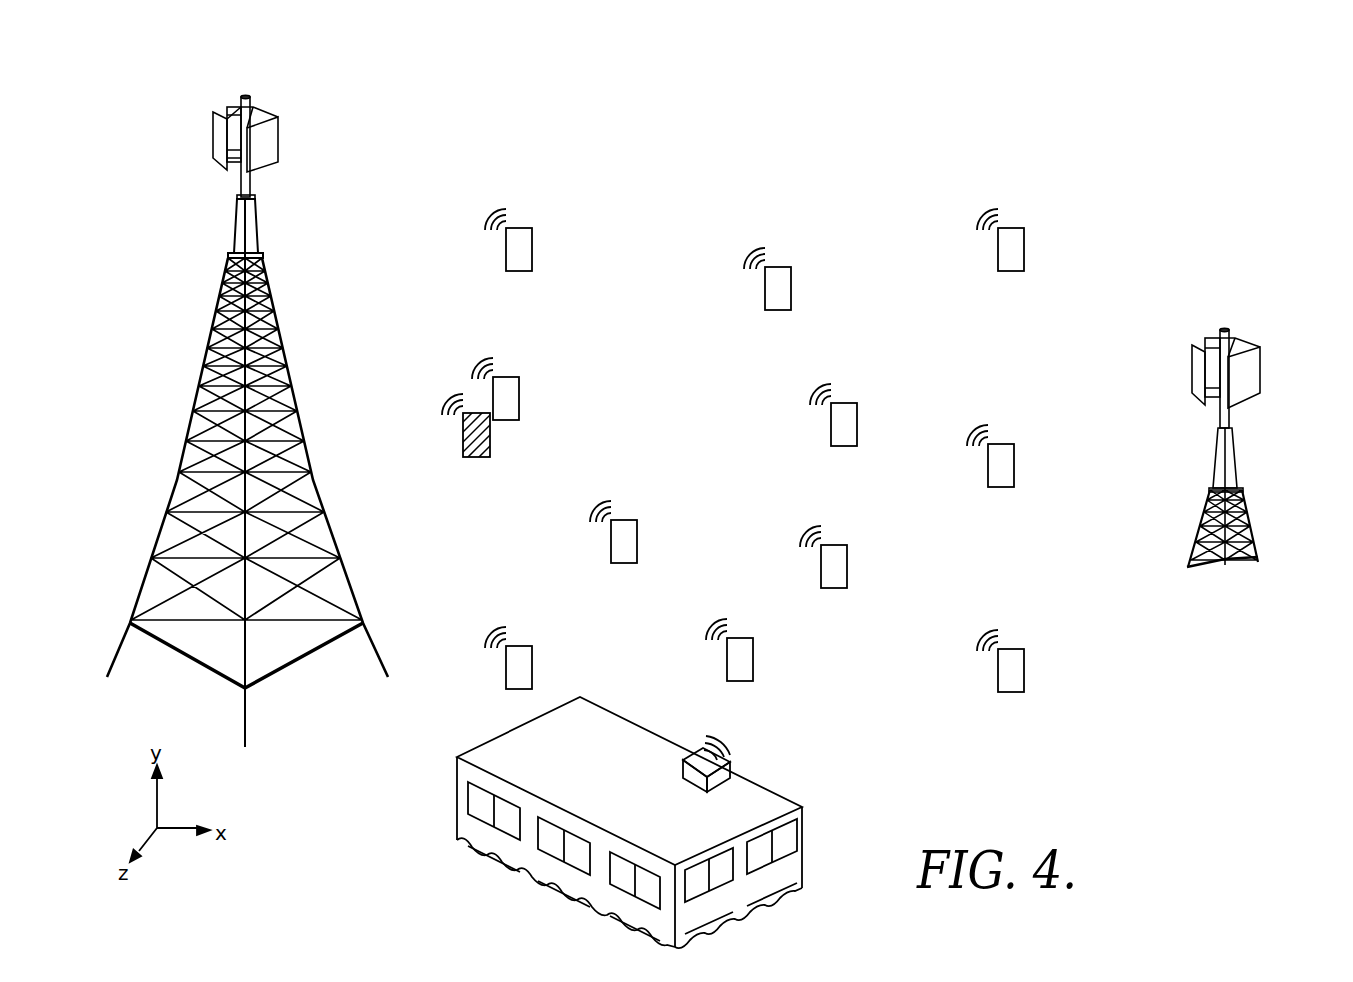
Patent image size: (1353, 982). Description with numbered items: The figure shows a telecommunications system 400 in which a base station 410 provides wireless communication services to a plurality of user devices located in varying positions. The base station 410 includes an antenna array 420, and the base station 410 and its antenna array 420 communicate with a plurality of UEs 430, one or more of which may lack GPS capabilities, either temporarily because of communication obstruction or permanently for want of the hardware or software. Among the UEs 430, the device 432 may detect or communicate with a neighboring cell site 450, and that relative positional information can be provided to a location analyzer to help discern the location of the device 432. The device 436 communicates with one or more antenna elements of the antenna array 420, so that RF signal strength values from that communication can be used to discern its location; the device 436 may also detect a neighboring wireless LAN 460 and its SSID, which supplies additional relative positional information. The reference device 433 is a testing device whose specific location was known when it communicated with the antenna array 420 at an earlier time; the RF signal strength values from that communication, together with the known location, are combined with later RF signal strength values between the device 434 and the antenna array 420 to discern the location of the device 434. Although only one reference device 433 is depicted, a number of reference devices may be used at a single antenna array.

The system 400 is at (168, 91).
The base station 410 is at (276, 89).
The antenna array 420 is at (294, 190).
The UEs 430 is at (629, 204).
The device 432 is at (1014, 466).
The reference device 433 is at (491, 438).
The device 434 is at (519, 398).
The device 436 is at (753, 660).
The neighboring cell site 450 is at (1255, 322).
The wireless LAN 460 is at (744, 755).